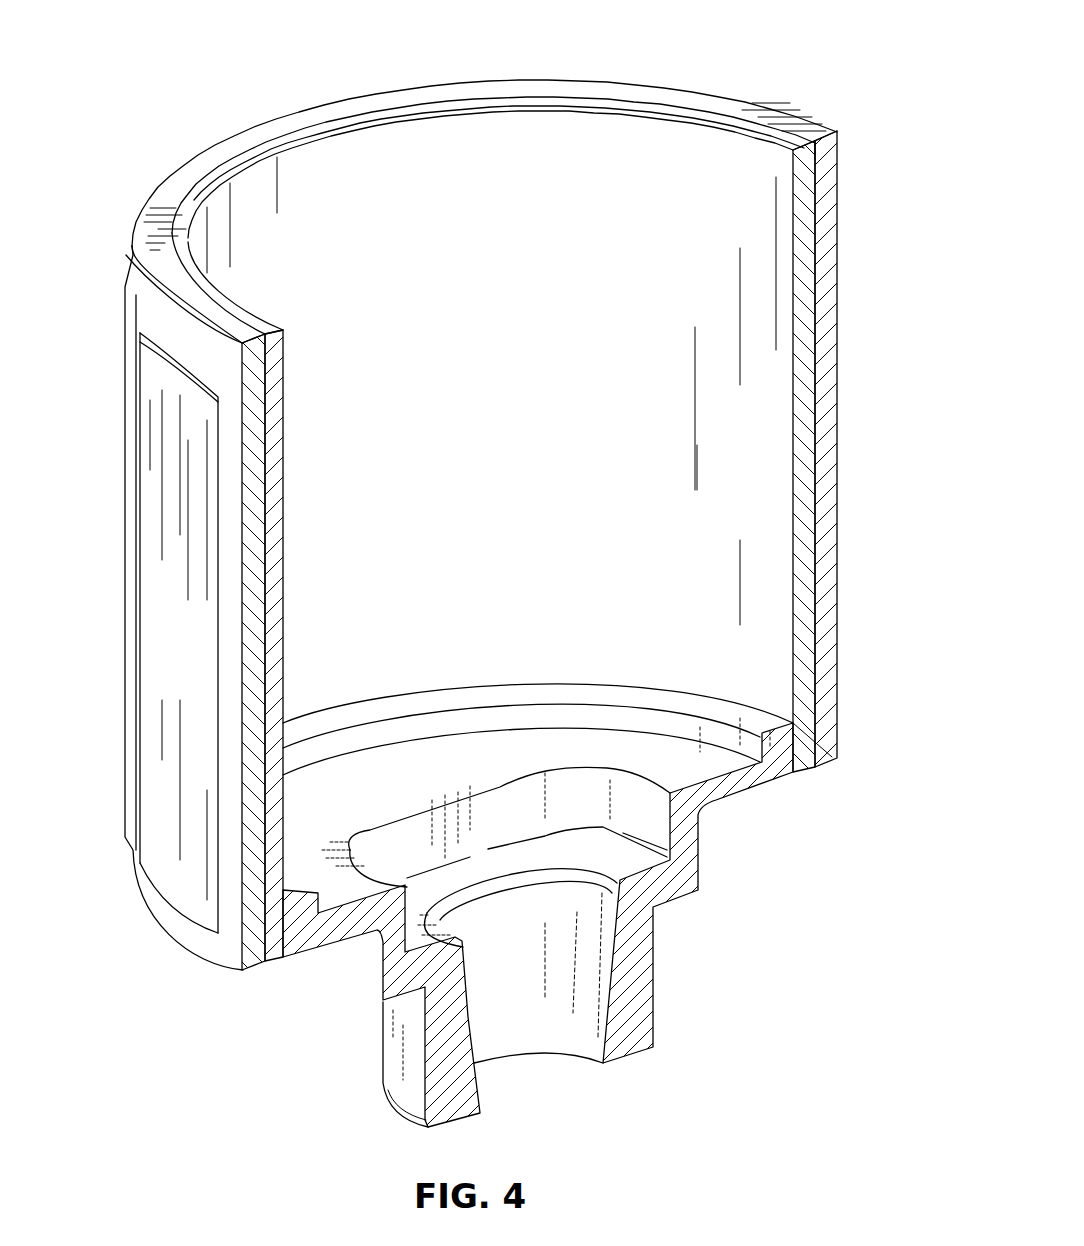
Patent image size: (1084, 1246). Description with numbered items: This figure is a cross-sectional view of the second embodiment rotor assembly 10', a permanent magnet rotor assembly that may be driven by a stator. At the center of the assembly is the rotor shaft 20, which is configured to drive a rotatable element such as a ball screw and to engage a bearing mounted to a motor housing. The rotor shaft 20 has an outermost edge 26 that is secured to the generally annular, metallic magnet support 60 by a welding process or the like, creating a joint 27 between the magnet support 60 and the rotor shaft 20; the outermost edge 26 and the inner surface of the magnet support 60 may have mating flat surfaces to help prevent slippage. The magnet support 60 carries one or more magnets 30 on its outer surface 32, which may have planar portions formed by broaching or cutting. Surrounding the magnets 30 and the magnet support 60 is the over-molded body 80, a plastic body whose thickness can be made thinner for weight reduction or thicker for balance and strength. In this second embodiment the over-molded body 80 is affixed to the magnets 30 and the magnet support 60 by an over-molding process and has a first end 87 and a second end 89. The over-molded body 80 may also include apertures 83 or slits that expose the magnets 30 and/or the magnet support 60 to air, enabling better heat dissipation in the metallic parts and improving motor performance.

The rotor assembly 10' is at (499, 566).
The rotor shaft 20 is at (640, 975).
The outermost edge 26 is at (793, 740).
The joint 27 is at (793, 740).
The magnet 30 is at (180, 625).
The outer surface 32 is at (248, 505).
The magnet support 60 is at (805, 408).
The over-molded body 80 is at (230, 368).
The aperture 83 is at (130, 347).
The first end 87 is at (833, 712).
The second end 89 is at (828, 162).